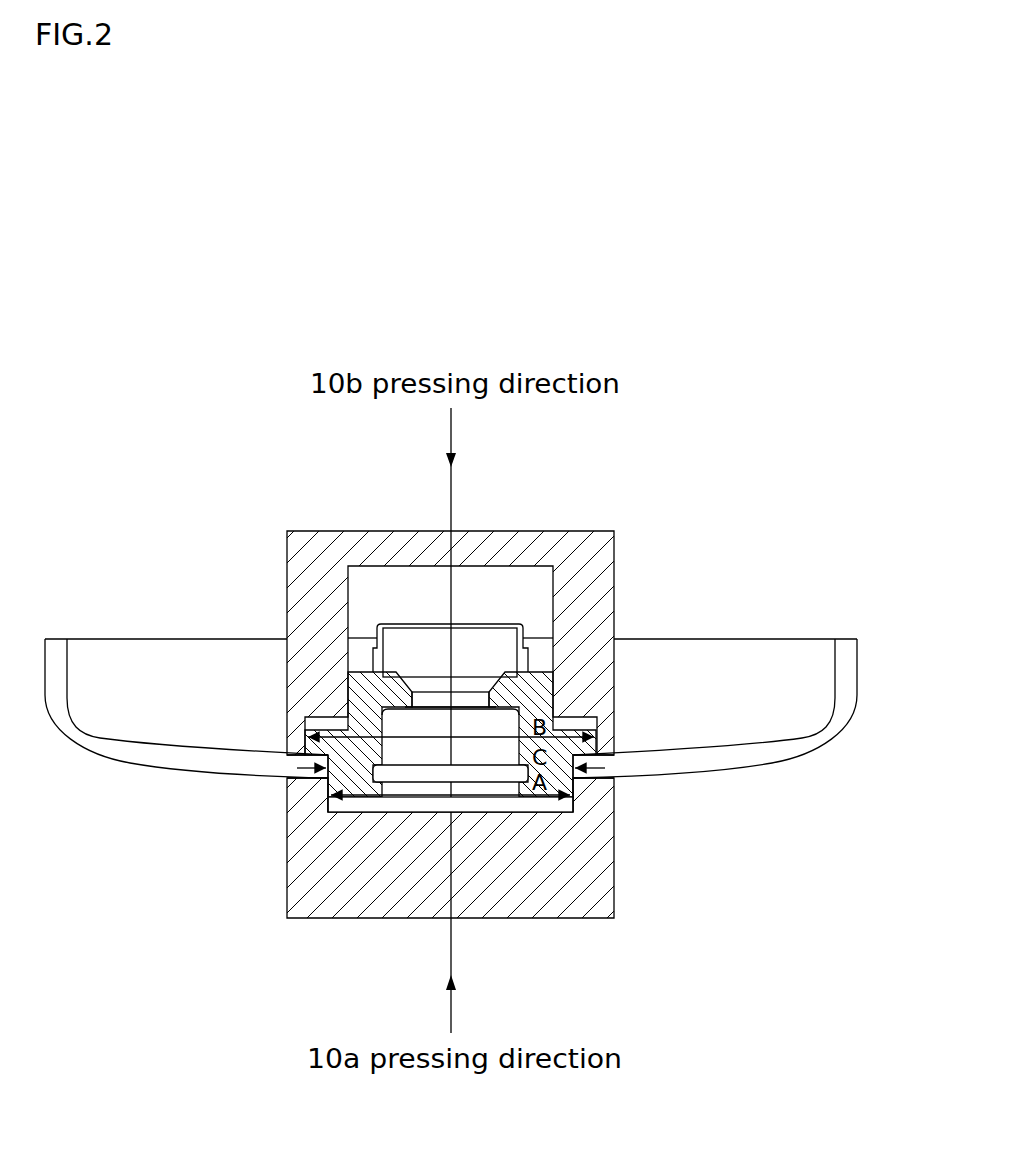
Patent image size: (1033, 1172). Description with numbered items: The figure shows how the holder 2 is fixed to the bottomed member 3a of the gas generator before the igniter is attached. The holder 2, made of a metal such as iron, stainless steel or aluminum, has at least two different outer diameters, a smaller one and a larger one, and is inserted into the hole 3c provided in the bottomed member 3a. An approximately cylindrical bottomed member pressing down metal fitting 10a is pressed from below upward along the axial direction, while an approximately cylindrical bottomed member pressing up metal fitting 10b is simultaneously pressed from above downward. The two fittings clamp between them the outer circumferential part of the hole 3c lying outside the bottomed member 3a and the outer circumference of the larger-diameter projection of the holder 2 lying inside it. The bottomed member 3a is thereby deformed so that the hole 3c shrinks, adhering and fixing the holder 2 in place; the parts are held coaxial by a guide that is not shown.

The holder 2 is at (340, 766).
The bottomed member 3a is at (194, 762).
The hole 3c is at (580, 777).
The bottomed member pressing down metal fitting 10a is at (527, 907).
The bottomed member pressing up metal fitting 10b is at (578, 538).